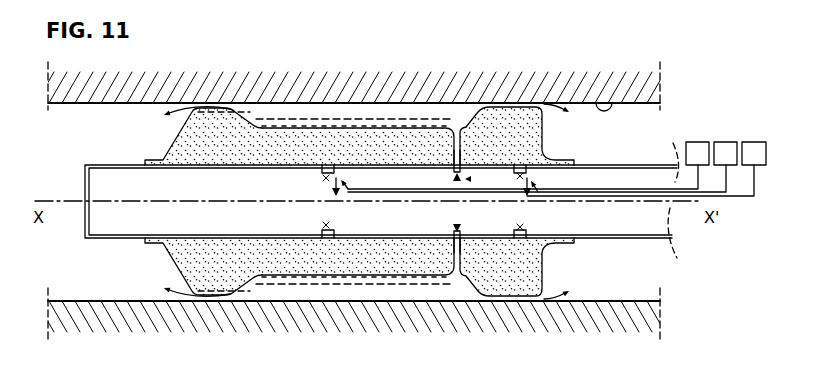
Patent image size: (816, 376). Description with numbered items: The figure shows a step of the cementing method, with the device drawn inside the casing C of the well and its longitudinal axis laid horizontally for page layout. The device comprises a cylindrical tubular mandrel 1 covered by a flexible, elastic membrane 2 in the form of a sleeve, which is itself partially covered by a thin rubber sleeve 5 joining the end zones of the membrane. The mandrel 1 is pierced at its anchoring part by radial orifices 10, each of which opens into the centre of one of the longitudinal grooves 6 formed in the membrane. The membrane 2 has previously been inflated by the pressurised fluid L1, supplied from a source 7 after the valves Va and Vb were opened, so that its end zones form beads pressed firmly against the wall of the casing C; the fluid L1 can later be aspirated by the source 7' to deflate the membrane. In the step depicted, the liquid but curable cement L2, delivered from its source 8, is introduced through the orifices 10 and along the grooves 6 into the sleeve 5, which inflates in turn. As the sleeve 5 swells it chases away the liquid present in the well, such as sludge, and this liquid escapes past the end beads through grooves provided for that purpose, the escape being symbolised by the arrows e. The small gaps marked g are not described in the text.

The tubular mandrel 1 is at (117, 164).
The membrane 2 is at (326, 176).
The sleeve 5 is at (379, 126).
The grooves 6 is at (478, 147).
The source for distributing fluid 7 is at (528, 165).
The source for distributing curable material 8 is at (542, 167).
The source for aspirating fluid 7' is at (646, 169).
The radial orifices 10 is at (457, 171).
The casing C is at (612, 103).
The fluid L1 is at (547, 138).
The liquid curable material L2 is at (430, 120).
The valve Va is at (268, 128).
The valve Vb is at (546, 136).
The escape arrows e is at (363, 202).
The gap g is at (470, 178).